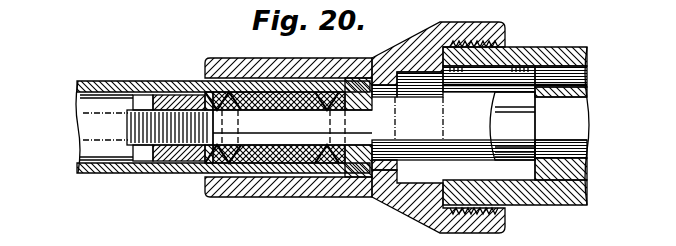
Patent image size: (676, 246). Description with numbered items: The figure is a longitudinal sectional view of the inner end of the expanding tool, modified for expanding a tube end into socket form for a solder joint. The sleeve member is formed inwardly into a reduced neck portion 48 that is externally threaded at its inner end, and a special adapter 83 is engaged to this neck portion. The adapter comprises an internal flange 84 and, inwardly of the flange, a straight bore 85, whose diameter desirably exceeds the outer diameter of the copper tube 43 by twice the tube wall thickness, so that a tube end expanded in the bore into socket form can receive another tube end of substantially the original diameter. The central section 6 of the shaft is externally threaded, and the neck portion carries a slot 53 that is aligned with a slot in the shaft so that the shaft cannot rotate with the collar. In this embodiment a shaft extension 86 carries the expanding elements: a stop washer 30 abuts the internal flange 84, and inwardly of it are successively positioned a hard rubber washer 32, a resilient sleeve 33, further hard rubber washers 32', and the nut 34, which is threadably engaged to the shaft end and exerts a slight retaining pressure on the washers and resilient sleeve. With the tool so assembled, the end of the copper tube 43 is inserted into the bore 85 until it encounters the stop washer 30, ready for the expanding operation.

The copper tube 43 is at (100, 166).
The nut 34 is at (182, 107).
The straight bore 85 is at (314, 182).
The resilient sleeve 33 is at (281, 99).
The hard rubber washers 32' is at (223, 101).
The hard rubber washer 32 is at (330, 102).
The stop washer 30 is at (360, 80).
The shaft extension 86 is at (279, 132).
The special adapter 83 is at (422, 208).
The internal flange 84 is at (385, 170).
The reduced neck portion 48 is at (576, 52).
The slot 53 is at (589, 75).
The central section 6 is at (589, 170).